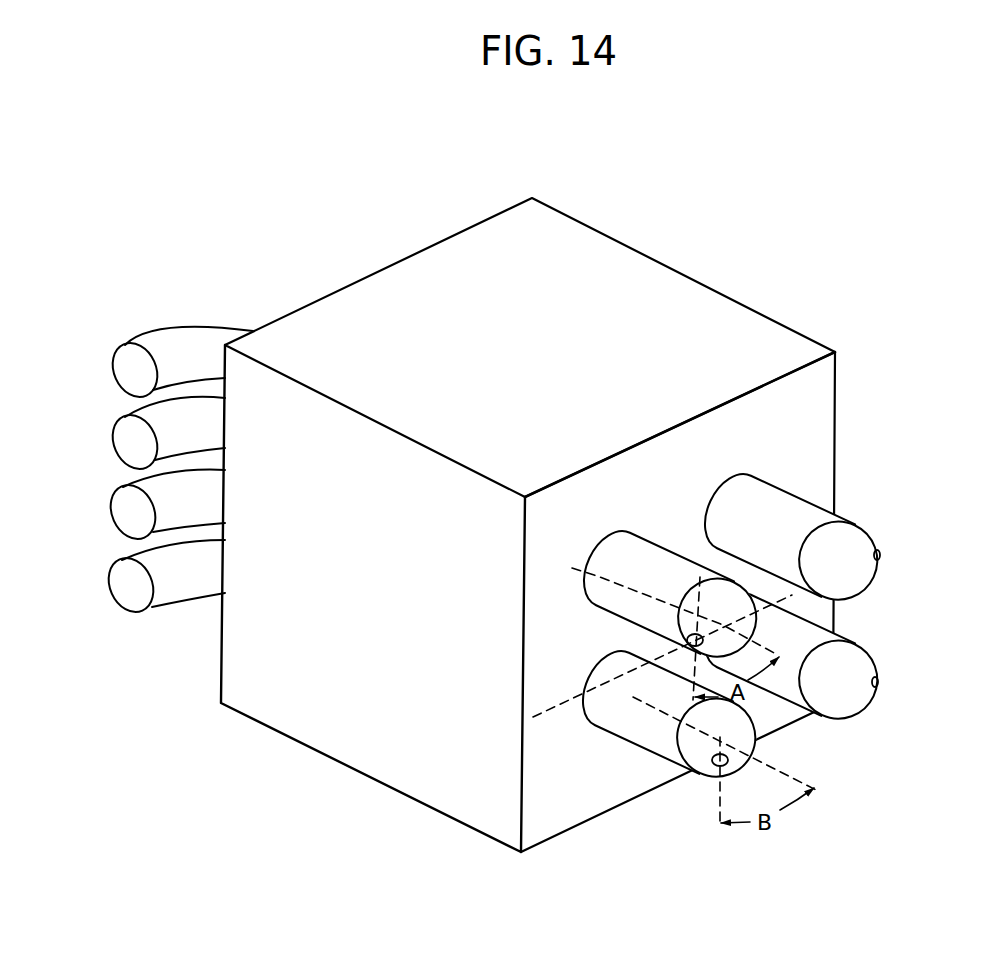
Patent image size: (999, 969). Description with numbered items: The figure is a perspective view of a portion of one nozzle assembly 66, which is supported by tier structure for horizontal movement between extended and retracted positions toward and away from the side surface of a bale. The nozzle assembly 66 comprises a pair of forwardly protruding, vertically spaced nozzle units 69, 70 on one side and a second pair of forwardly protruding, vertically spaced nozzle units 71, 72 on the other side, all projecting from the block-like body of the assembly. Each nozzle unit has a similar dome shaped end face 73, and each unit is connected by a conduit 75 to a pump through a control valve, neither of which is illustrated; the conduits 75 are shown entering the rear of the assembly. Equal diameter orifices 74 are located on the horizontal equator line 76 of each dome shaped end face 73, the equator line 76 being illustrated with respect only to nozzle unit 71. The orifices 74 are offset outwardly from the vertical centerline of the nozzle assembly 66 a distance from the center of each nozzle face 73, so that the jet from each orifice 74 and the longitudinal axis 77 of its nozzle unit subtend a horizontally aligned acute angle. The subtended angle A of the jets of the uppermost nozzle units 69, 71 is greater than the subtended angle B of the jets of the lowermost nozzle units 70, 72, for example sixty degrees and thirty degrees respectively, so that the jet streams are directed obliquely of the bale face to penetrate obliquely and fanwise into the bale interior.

The nozzle assembly 66 is at (736, 242).
The nozzle unit 69 is at (807, 512).
The nozzle unit 70 is at (813, 637).
The nozzle unit 71 is at (627, 550).
The nozzle unit 72 is at (612, 715).
The dome shaped end face 73 is at (729, 602).
The orifice 74 is at (678, 635).
The conduit 75 is at (120, 560).
The horizontal equator line 76 is at (558, 707).
The cylinder axis line 77 is at (637, 807).